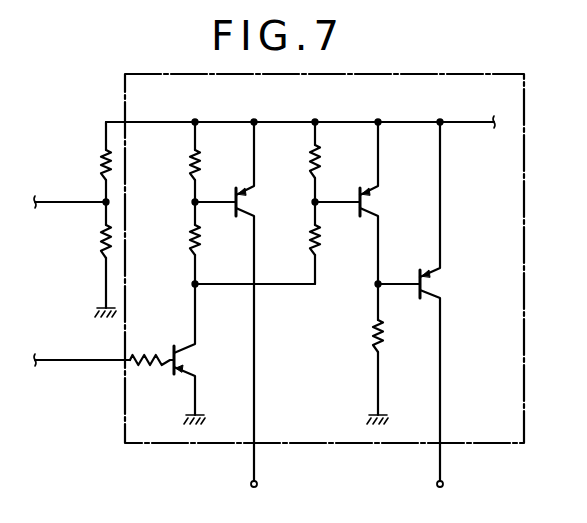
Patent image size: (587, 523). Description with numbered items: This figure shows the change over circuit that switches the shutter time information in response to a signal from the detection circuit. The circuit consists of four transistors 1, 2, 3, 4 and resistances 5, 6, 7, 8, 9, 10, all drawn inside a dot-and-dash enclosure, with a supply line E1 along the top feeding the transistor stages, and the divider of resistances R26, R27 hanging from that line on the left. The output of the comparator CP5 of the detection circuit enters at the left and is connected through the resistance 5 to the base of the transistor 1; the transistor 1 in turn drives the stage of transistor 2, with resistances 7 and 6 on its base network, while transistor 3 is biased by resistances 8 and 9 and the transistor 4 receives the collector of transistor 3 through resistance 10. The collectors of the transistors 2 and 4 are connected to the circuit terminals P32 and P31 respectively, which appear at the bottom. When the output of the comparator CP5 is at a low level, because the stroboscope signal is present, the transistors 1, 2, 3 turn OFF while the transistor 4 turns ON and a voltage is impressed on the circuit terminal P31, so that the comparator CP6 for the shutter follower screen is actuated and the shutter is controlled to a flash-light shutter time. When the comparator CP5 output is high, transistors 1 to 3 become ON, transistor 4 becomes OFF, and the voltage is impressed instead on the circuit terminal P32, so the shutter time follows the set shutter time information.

The transistor 1 is at (186, 360).
The transistor 2 is at (246, 206).
The transistor 3 is at (370, 206).
The transistor 4 is at (430, 288).
The resistance 5 is at (152, 346).
The resistance 6 is at (252, 243).
The resistance 7 is at (203, 160).
The resistance 8 is at (323, 160).
The resistance 9 is at (323, 241).
The resistance 10 is at (390, 352).
The resistance R26 is at (91, 162).
The resistance R27 is at (94, 258).
The comparator CP5 is at (75, 376).
The comparator CP6 is at (63, 218).
The power supply terminal E1 is at (305, 108).
The circuit terminal P31 is at (446, 481).
The circuit terminal P32 is at (260, 481).